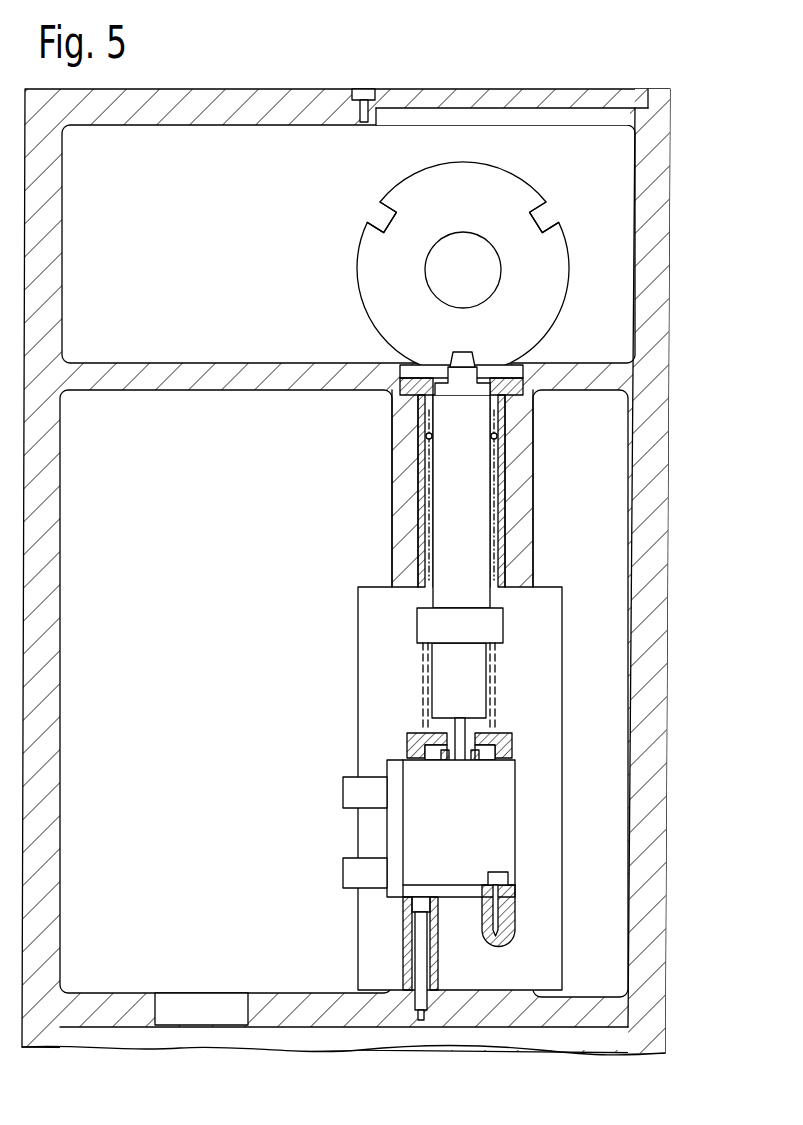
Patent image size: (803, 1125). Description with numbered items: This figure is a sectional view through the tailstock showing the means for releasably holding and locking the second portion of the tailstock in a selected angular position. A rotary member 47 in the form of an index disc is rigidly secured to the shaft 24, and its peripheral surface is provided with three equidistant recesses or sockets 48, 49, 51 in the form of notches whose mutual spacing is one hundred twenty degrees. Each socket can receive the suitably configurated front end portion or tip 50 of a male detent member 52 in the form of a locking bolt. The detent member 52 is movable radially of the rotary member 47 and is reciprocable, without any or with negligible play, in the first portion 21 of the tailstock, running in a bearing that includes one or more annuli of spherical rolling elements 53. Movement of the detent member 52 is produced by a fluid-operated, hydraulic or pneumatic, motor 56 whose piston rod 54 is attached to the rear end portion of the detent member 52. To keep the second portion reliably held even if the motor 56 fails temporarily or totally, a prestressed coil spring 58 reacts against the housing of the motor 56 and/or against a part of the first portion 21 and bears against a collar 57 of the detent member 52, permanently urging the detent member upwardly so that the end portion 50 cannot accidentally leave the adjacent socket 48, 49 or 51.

The first portion 21 is at (52, 652).
The rotary member 47 is at (477, 183).
The socket 49 is at (378, 208).
The socket 51 is at (543, 213).
The shaft 24 is at (430, 272).
The socket 48 is at (468, 359).
The front end portion 50 is at (460, 383).
The detent member 52 is at (467, 467).
The spherical rolling elements 53 is at (431, 440).
The collar 57 is at (430, 630).
The coil spring 58 is at (427, 677).
The piston rod 54 is at (432, 727).
The motor 56 is at (415, 829).